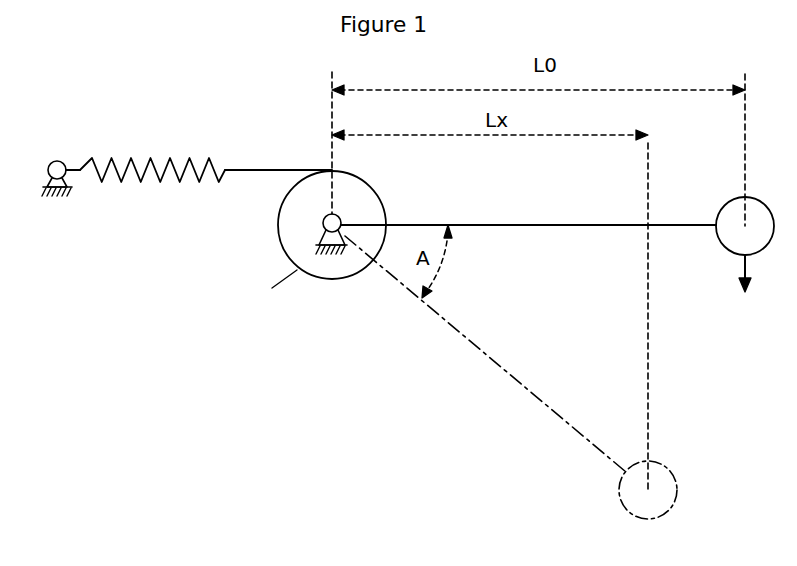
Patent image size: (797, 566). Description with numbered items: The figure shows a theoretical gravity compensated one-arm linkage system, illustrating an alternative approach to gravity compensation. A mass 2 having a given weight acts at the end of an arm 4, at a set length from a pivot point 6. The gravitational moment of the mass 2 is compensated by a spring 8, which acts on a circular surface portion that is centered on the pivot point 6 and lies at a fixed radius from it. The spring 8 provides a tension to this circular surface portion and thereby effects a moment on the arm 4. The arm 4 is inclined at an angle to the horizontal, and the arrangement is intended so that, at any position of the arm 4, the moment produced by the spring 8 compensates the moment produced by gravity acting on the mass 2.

The mass 2 is at (757, 198).
The arm 4 is at (520, 226).
The pivot point 6 is at (322, 229).
The spring 8 is at (147, 187).